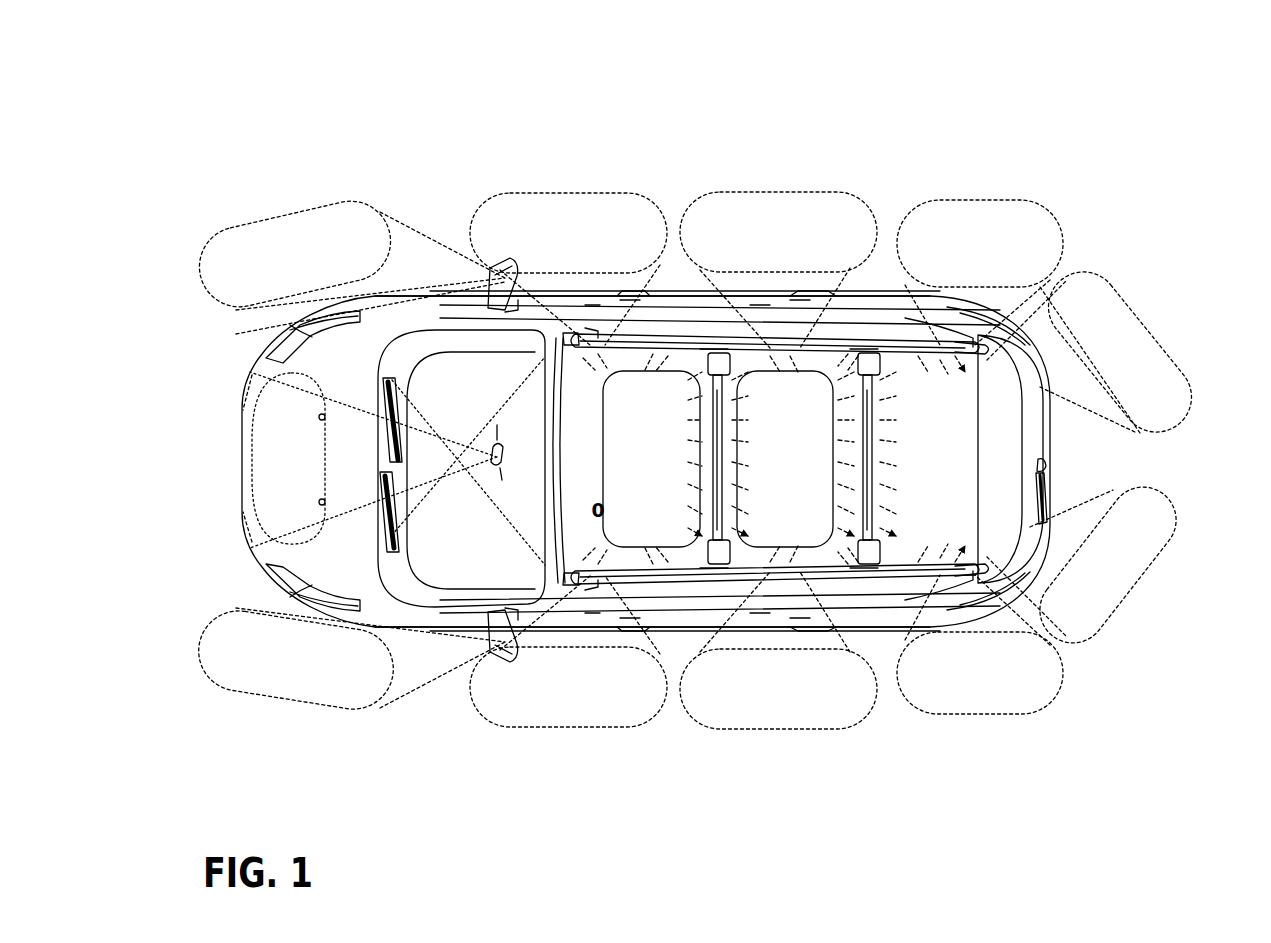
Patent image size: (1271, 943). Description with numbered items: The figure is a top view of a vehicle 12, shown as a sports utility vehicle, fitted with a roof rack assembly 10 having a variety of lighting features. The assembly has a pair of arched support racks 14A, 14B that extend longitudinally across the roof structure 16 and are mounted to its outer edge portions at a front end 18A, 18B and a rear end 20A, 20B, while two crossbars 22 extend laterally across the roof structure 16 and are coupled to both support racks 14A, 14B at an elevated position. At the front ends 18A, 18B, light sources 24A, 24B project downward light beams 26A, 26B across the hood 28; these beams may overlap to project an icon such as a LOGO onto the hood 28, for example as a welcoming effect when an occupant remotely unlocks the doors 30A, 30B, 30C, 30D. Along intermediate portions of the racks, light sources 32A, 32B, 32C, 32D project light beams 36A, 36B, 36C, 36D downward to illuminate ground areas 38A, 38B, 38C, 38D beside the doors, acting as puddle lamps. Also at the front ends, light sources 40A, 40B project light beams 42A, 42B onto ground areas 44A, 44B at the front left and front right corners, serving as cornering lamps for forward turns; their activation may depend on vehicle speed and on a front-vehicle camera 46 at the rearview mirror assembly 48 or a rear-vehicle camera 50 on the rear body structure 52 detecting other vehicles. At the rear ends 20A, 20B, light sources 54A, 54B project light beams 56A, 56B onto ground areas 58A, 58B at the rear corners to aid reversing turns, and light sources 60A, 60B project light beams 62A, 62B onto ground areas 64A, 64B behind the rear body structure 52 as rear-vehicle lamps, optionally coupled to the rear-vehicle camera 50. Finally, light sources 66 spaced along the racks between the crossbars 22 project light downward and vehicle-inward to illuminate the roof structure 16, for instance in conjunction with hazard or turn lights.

The roof rack assembly 10 is at (547, 99).
The vehicle 12 is at (226, 474).
The arched support rack 14A is at (680, 586).
The arched support rack 14B is at (674, 331).
The roof structure 16 is at (680, 403).
The front end of support rack 18A is at (500, 656).
The front end of support rack 18B is at (500, 264).
The rear end of support rack 20A is at (952, 600).
The rear end of support rack 20B is at (968, 342).
The crossbar 22 is at (712, 462).
The light source 24A is at (574, 568).
The light source 24B is at (574, 350).
The light beam 26A is at (308, 557).
The light beam 26B is at (295, 348).
The hood 28 is at (296, 357).
The door 30A is at (588, 602).
The door 30B is at (768, 600).
The door 30C is at (588, 318).
The door 30D is at (762, 322).
The light source 32A is at (630, 598).
The light source 32B is at (788, 605).
The light source 32C is at (630, 322).
The light source 32D is at (780, 325).
The light beam 36A is at (530, 727).
The light beam 36B is at (760, 729).
The light beam 36C is at (560, 193).
The light beam 36D is at (815, 193).
The ground area 38A is at (526, 719).
The ground area 38B is at (723, 709).
The ground area 38C is at (521, 232).
The ground area 38D is at (824, 234).
The light source 40A is at (572, 586).
The light source 40B is at (572, 333).
The light beam 42A is at (497, 460).
The light beam 42B is at (497, 455).
The ground area 44A is at (243, 679).
The ground area 44B is at (243, 276).
The front-vehicle camera 46 is at (492, 450).
The rearview mirror assembly 48 is at (494, 445).
The rear-vehicle camera 50 is at (1049, 452).
The rear body structure 52 is at (1050, 440).
The light source 54A is at (938, 600).
The light source 54B is at (938, 343).
The light beam 56A is at (980, 716).
The light beam 56B is at (1005, 207).
The ground area 58A is at (969, 696).
The ground area 58B is at (994, 261).
The light source 60A is at (1000, 605).
The light source 60B is at (1040, 300).
The light beam 62A is at (1060, 477).
The light beam 62B is at (1057, 440).
The ground area 64A is at (1116, 566).
The ground area 64B is at (1123, 407).
The light sources 66 is at (672, 362).